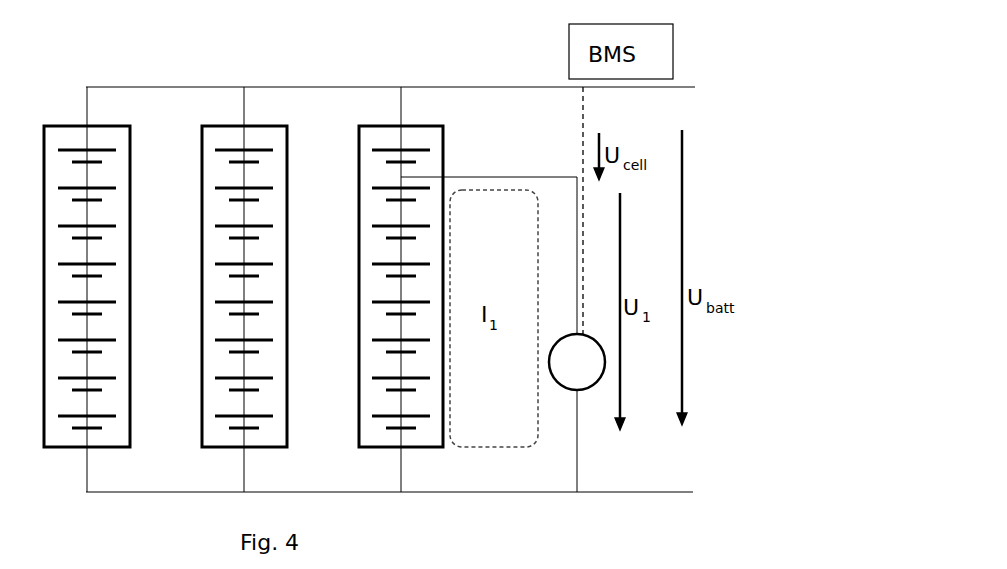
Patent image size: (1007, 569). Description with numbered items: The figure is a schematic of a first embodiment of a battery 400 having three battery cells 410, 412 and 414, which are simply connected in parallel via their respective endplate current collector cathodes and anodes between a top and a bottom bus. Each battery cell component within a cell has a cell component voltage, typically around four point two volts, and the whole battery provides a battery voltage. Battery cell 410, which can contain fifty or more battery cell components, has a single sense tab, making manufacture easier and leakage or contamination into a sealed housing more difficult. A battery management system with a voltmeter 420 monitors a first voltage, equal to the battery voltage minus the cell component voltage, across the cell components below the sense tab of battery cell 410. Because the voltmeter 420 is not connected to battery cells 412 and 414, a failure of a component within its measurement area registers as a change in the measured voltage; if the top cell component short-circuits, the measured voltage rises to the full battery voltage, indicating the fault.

The battery 400 is at (733, 110).
The battery cell 410 is at (416, 125).
The battery cell 412 is at (263, 123).
The battery cell 414 is at (62, 123).
The voltmeter 420 is at (577, 390).